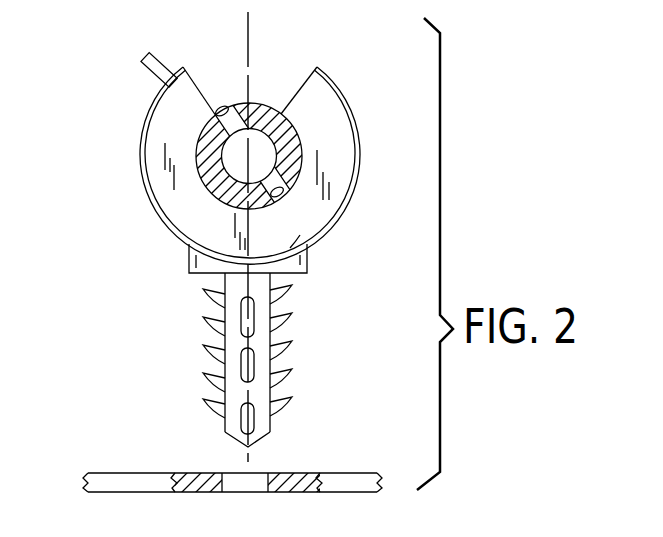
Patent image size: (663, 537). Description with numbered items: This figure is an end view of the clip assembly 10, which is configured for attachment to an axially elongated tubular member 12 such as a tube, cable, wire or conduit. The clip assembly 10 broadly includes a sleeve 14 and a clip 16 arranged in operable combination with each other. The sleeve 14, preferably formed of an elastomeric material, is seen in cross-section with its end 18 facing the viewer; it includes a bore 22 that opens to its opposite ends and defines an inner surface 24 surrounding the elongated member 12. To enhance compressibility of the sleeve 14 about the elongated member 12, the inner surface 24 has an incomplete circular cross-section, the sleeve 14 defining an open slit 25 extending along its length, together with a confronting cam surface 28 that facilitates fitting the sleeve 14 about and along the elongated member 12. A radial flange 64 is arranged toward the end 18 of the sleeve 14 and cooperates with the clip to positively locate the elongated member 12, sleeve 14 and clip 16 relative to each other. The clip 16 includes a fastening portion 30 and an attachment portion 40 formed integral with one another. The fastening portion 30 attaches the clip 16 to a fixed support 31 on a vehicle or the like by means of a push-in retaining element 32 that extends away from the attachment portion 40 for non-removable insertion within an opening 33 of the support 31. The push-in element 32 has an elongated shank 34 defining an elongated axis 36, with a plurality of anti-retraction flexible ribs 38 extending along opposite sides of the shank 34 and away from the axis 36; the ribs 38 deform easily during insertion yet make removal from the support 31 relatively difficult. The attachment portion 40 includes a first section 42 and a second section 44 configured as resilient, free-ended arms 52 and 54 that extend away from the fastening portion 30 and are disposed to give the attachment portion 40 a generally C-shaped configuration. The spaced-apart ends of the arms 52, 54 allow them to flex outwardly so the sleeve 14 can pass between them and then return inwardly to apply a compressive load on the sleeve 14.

The clip assembly 10 is at (163, 50).
The elongated tubular member 12 is at (225, 205).
The sleeve 14 is at (160, 238).
The clip 16 is at (370, 118).
The end of sleeve 18 is at (150, 196).
The bore 22 is at (224, 108).
The inner surface 24 is at (278, 197).
The slit 25 is at (281, 103).
The cam surface 28 is at (193, 80).
The fastening portion 30 is at (308, 78).
The support 31 is at (132, 474).
The push-in retaining element 32 is at (218, 400).
The opening 33 is at (262, 474).
The shank 34 is at (224, 289).
The elongated axis 36 is at (242, 448).
The anti-retraction flexible ribs 38 is at (288, 320).
The attachment portion 40 is at (122, 186).
The first section 42 is at (142, 127).
The second section 44 is at (365, 152).
The arm 52 is at (150, 104).
The arm 54 is at (352, 203).
The radial flange 64 is at (142, 158).